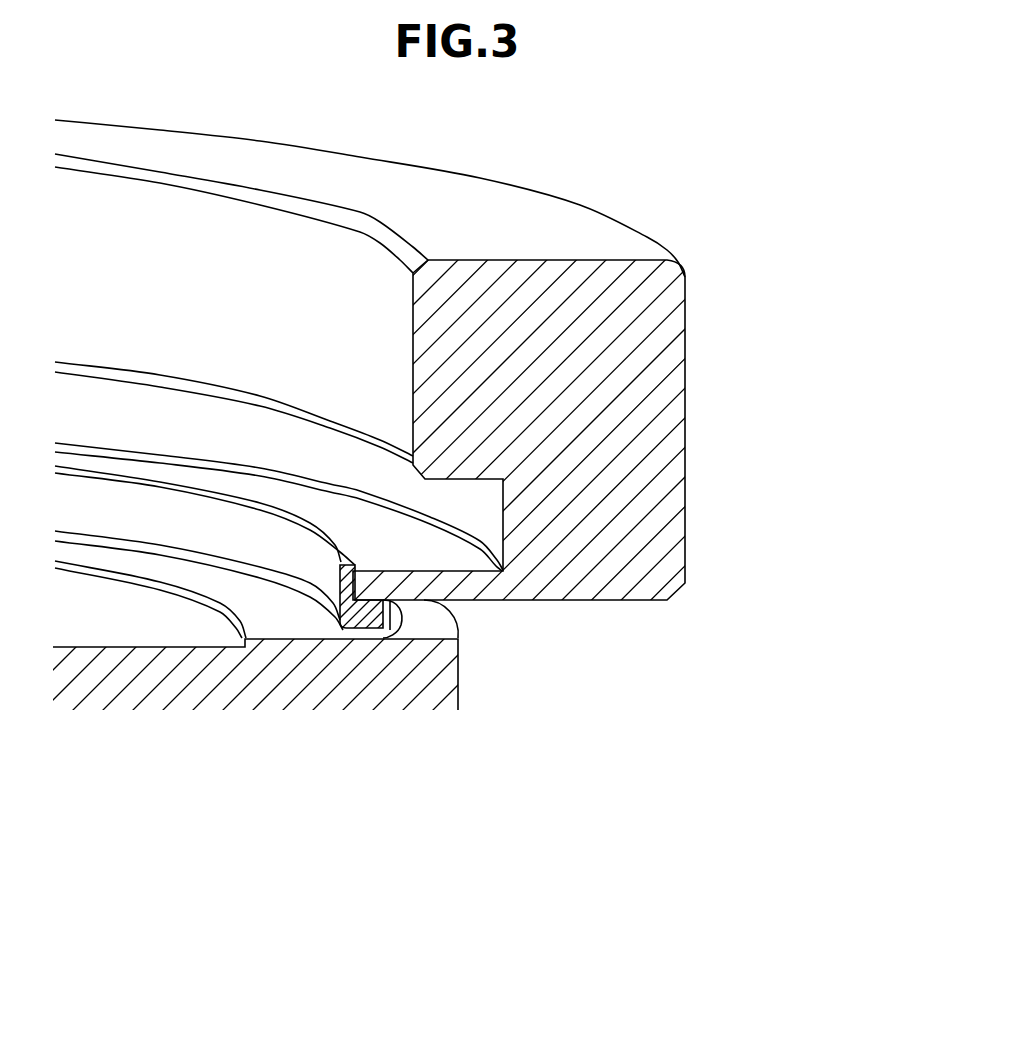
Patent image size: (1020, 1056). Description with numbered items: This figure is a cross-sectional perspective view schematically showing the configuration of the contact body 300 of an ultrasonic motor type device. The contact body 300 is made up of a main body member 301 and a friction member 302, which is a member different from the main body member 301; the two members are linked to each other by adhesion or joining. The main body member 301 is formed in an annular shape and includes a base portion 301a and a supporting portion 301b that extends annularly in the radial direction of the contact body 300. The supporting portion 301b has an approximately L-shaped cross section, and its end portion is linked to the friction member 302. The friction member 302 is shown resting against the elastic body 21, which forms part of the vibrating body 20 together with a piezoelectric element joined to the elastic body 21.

The contact body 300 is at (510, 533).
The main body member 301 is at (510, 481).
The base portion 301a is at (653, 582).
The supporting portion 301b is at (475, 582).
The friction member 302 is at (375, 633).
The elastic body 21 is at (256, 657).
The vibrating body 20 is at (256, 671).